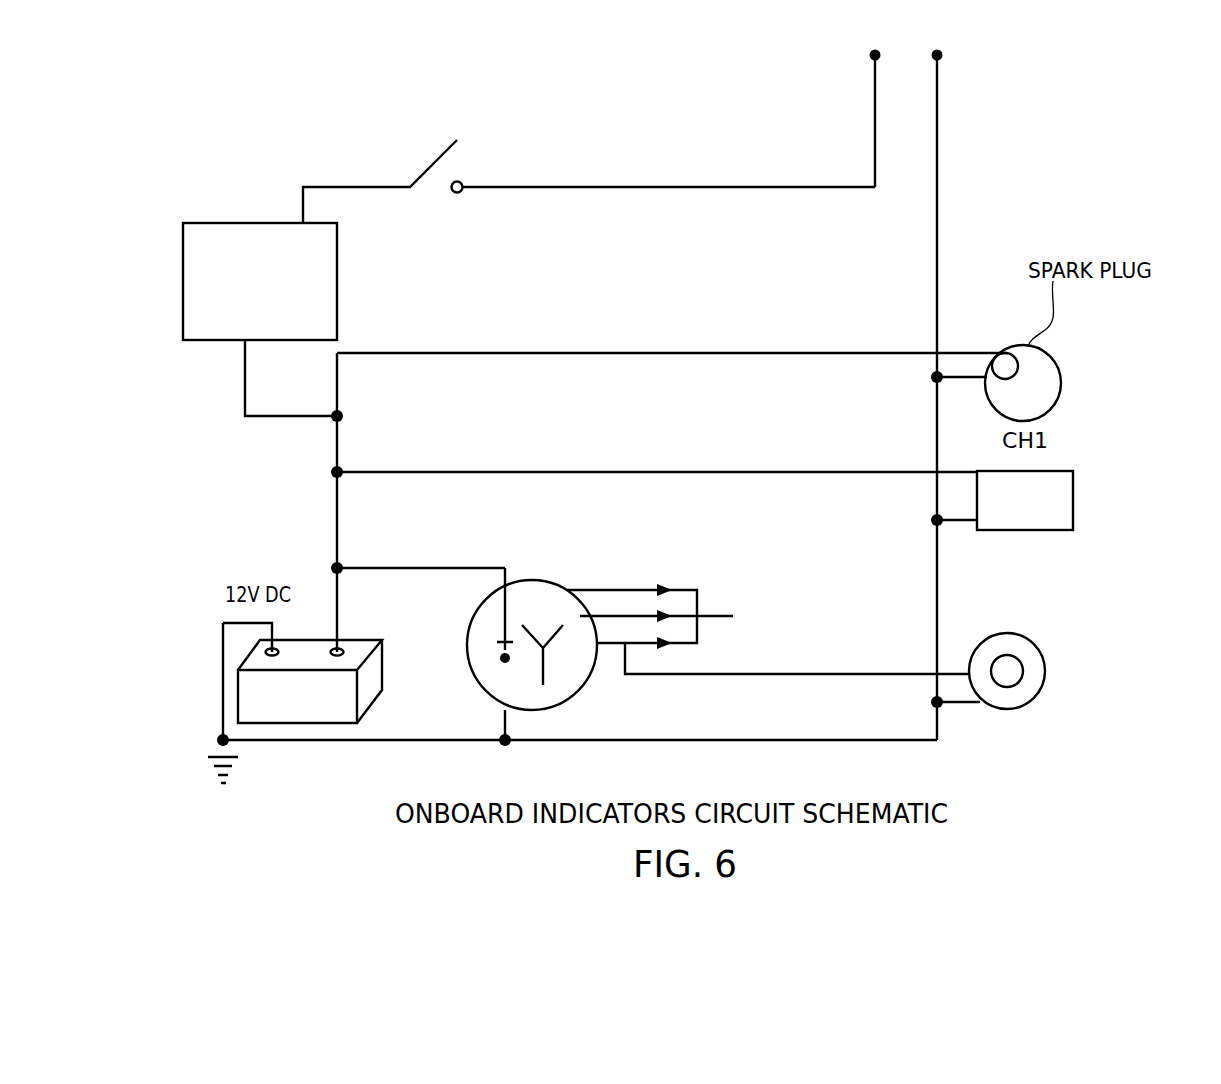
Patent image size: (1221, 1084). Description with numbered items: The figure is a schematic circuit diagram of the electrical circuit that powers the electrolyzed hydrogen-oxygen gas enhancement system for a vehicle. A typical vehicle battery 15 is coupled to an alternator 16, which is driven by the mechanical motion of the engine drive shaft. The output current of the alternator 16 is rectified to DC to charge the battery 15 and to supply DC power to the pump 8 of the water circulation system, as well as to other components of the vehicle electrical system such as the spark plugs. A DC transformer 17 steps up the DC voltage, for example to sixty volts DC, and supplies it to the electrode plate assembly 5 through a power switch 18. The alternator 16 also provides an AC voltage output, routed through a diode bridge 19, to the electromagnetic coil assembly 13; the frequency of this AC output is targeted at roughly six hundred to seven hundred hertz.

The electrode plate assembly 5 is at (987, 395).
The pump 8 is at (1073, 498).
The electromagnetic coil assembly 13 is at (1041, 651).
The vehicle battery 15 is at (382, 665).
The alternator 16 is at (498, 700).
The DC transformer 17 is at (337, 266).
The power switch 18 is at (453, 144).
The diode bridge 19 is at (708, 602).